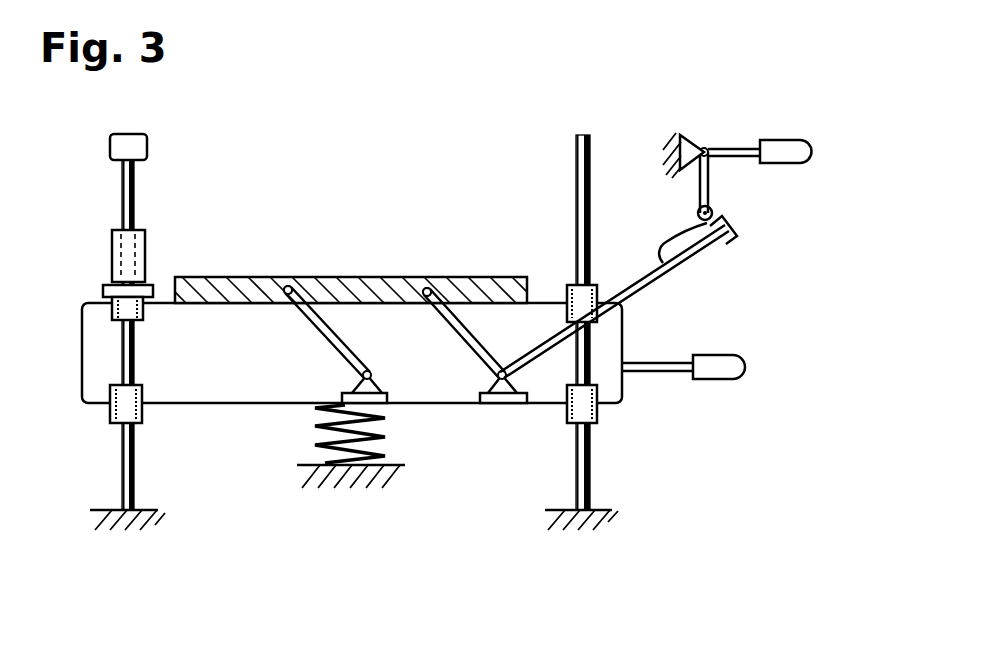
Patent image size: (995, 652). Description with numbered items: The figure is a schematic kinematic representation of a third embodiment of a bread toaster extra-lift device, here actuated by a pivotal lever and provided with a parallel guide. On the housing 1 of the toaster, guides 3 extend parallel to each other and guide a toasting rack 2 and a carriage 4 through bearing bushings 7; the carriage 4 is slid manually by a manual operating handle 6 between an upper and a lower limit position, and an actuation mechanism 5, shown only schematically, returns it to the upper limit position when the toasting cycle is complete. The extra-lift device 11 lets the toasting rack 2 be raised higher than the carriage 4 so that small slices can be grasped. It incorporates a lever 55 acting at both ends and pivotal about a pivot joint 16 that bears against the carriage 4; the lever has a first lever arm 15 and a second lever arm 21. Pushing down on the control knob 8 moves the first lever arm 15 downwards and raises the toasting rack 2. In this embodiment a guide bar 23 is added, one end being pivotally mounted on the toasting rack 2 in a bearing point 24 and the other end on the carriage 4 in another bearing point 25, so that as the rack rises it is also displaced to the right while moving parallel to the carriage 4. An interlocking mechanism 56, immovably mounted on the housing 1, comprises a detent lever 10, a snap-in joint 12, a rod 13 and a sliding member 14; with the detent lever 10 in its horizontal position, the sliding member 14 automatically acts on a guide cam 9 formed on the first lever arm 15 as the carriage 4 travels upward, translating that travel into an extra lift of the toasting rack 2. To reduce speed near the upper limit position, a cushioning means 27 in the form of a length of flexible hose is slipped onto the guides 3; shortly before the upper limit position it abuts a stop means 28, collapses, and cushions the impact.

The housing 1 is at (122, 520).
The toasting rack 2 is at (216, 281).
The guides 3 is at (123, 195).
The carriage 4 is at (193, 385).
The actuation mechanism 5 is at (317, 440).
The manual operating handle 6 is at (728, 380).
The bearing bushings 7 is at (112, 412).
The control knob 8 is at (722, 237).
The guide cam 9 is at (680, 228).
The detent lever 10 is at (800, 148).
The extra-lift device 11 is at (512, 350).
The snap-in joint 12 is at (705, 147).
The rod 13 is at (710, 176).
The sliding member 14 is at (713, 212).
The first lever arm 15 is at (647, 288).
The pivot joint 16 is at (500, 405).
The second lever arm 21 is at (455, 330).
The guide bar 23 is at (320, 335).
The bearing point 24 is at (290, 285).
The bearing point 25 is at (373, 372).
The cushioning means 27 is at (112, 250).
The stop means 28 is at (145, 150).
The lever 55 is at (533, 363).
The interlocking mechanism 56 is at (737, 128).